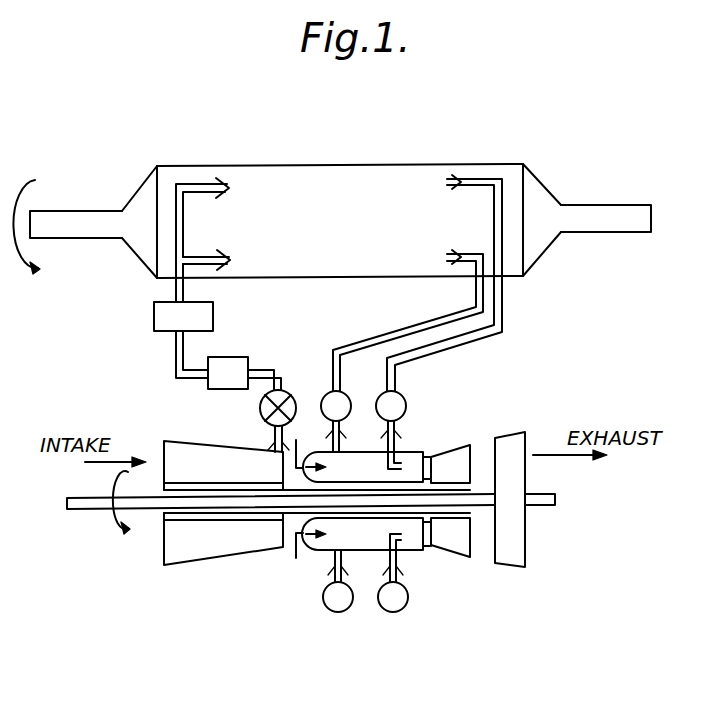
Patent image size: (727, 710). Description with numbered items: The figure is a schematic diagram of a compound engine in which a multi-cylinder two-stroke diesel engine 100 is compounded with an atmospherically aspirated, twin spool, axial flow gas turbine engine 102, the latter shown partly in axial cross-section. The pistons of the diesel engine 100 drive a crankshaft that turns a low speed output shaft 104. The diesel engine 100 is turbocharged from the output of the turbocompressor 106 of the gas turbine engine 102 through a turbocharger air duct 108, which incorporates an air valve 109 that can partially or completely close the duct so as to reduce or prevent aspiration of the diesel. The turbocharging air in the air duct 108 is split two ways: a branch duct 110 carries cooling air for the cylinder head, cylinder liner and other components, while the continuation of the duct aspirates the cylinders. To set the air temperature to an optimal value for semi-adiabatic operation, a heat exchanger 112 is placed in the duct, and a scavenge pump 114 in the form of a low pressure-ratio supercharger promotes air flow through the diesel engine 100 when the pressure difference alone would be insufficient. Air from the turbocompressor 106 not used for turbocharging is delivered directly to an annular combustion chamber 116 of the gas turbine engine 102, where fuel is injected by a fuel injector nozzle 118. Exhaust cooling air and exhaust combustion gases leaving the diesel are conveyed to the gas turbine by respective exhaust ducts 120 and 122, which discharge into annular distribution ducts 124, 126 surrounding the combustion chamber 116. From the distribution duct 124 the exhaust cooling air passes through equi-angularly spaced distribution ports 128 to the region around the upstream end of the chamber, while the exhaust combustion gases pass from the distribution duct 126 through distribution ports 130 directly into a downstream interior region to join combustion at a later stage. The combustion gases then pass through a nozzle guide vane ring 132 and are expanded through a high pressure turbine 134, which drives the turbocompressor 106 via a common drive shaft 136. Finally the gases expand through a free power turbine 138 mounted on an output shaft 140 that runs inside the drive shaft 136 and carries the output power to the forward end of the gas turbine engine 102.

The diesel engine 100 is at (347, 160).
The gas turbine engine 102 is at (298, 613).
The low speed output shaft 104 is at (73, 222).
The turbocompressor 106 is at (224, 480).
The turbocharger air duct 108 is at (200, 186).
The air valve 109 is at (262, 409).
The branch duct 110 is at (205, 258).
The heat exchanger 112 is at (222, 366).
The scavenge pump 114 is at (160, 315).
The annular combustion chamber 116 is at (363, 537).
The fuel injector nozzle 118 is at (296, 558).
The exhaust duct 120 is at (420, 328).
The exhaust duct 122 is at (470, 182).
The annular distribution duct 124 is at (340, 612).
The annular distribution duct 126 is at (398, 598).
The distribution ports 128 is at (333, 577).
The distribution ports 130 is at (398, 560).
The nozzle guide vane ring 132 is at (432, 456).
The high pressure turbine 134 is at (456, 460).
The drive shaft 136 is at (195, 520).
The free power turbine 138 is at (508, 540).
The output shaft 140 is at (555, 497).